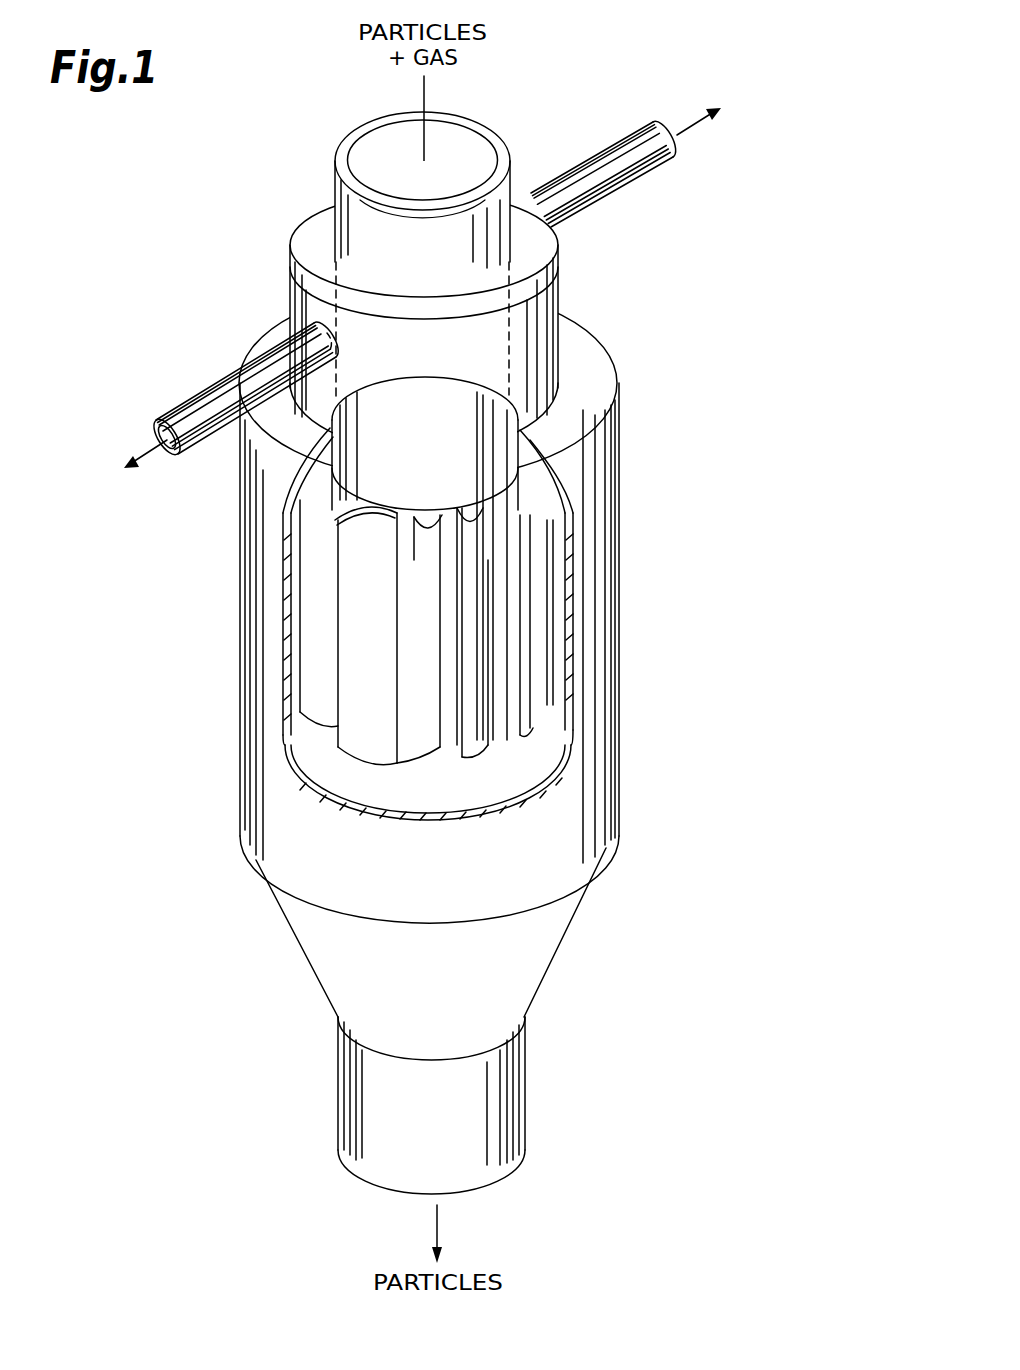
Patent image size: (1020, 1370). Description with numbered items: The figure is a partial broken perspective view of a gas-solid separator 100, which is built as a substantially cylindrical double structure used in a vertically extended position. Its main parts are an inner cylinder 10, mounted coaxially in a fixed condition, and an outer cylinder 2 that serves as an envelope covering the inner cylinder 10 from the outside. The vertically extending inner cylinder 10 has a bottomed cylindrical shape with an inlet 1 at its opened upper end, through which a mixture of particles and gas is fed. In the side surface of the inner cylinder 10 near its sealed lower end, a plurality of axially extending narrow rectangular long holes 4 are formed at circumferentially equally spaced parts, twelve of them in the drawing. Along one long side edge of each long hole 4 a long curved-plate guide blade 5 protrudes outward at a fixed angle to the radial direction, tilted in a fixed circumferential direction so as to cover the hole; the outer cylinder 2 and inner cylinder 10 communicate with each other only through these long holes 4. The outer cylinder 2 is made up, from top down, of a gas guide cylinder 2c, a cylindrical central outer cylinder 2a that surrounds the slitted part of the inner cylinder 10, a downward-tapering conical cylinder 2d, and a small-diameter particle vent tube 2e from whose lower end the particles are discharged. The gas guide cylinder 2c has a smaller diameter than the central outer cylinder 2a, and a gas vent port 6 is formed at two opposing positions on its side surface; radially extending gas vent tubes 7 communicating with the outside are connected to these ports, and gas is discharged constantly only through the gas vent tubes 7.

The inlet 1 is at (466, 134).
The outer cylinder 2 is at (808, 322).
The central outer cylinder 2a is at (602, 483).
The gas guide cylinder 2c is at (548, 293).
The conical cylinder 2d is at (585, 898).
The particle vent tube 2e is at (540, 1063).
The long holes 4 is at (540, 467).
The guide blade 5 is at (427, 657).
The gas vent port 6 is at (327, 333).
The gas vent tube 7 is at (635, 145).
The inner cylinder 10 is at (512, 190).
The gas-solid separator 100 is at (684, 1150).